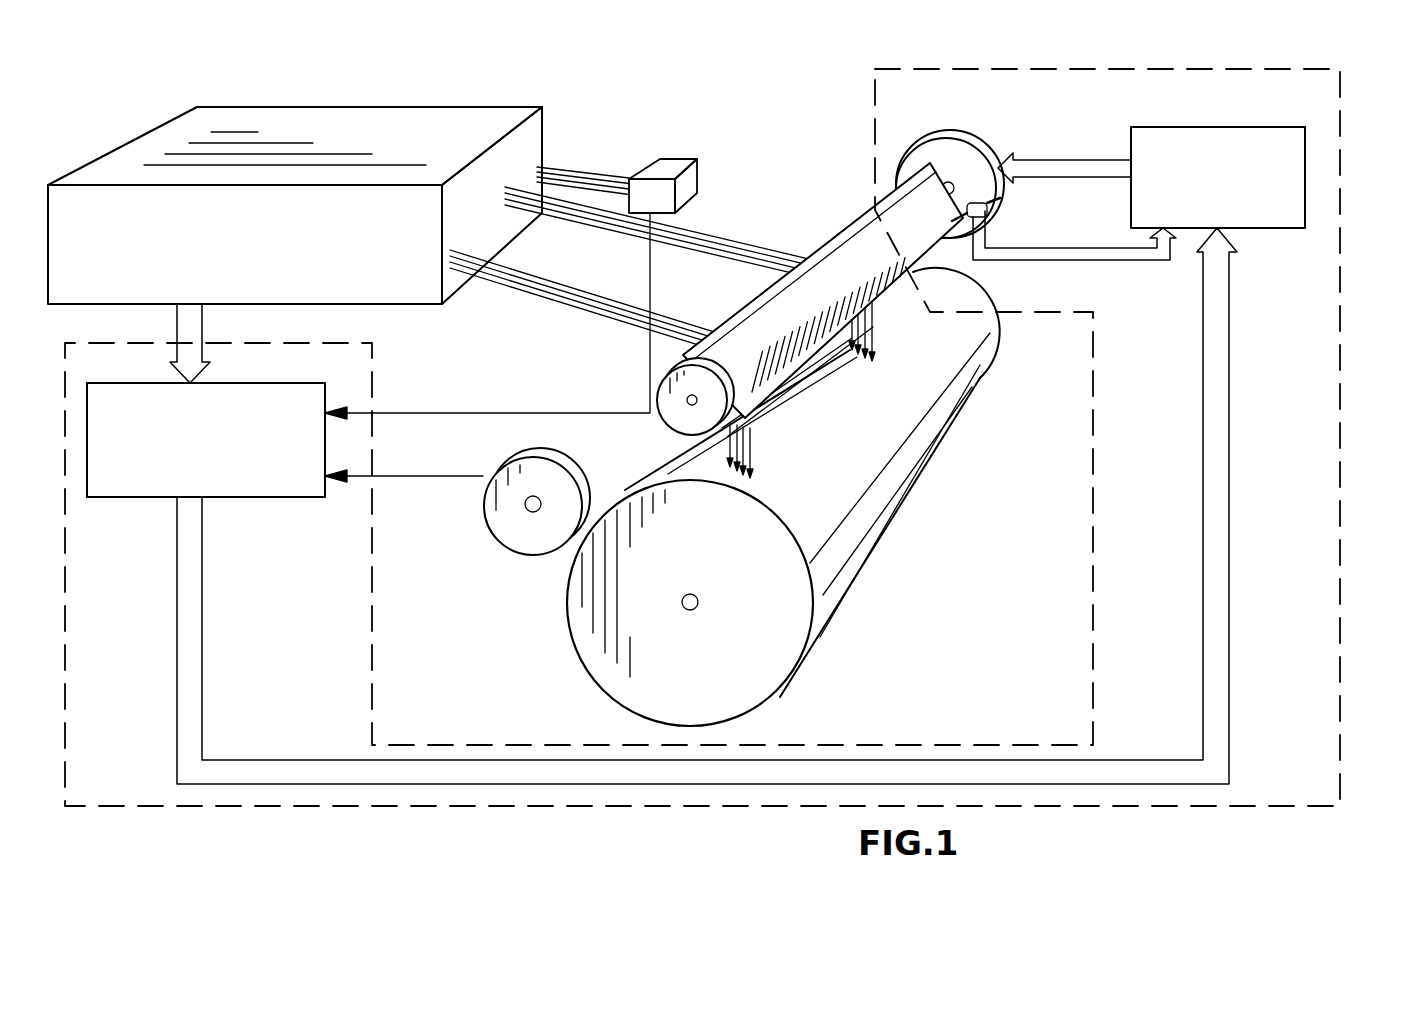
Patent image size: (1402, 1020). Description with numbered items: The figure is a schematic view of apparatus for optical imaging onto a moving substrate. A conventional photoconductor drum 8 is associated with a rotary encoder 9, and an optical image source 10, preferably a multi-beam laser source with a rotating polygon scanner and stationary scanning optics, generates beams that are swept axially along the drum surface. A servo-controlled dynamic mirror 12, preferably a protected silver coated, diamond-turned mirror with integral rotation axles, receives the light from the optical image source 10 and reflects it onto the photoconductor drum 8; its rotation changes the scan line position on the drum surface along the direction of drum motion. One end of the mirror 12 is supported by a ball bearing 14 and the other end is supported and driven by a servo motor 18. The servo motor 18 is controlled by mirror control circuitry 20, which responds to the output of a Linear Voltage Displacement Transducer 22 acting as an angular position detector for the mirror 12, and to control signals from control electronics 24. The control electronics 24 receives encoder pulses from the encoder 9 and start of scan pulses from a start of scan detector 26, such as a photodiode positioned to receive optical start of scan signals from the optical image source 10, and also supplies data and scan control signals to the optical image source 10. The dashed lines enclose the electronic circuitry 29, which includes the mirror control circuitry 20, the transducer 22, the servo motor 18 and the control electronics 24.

The photoconductor drum 8 is at (789, 688).
The rotary encoder 9 is at (502, 530).
The optical image source 10 is at (413, 105).
The servo-controlled dynamic mirror 12 is at (852, 240).
The ball bearing 14 is at (671, 428).
The servo motor 18 is at (958, 132).
The mirror control circuitry 20 is at (1197, 126).
The Linear Voltage Displacement Transducer (LVDT) 22 is at (997, 217).
The control electronics 24 is at (248, 498).
The start of scan (SOS) detector 26 is at (673, 158).
The electronic circuitry 29 is at (1340, 243).